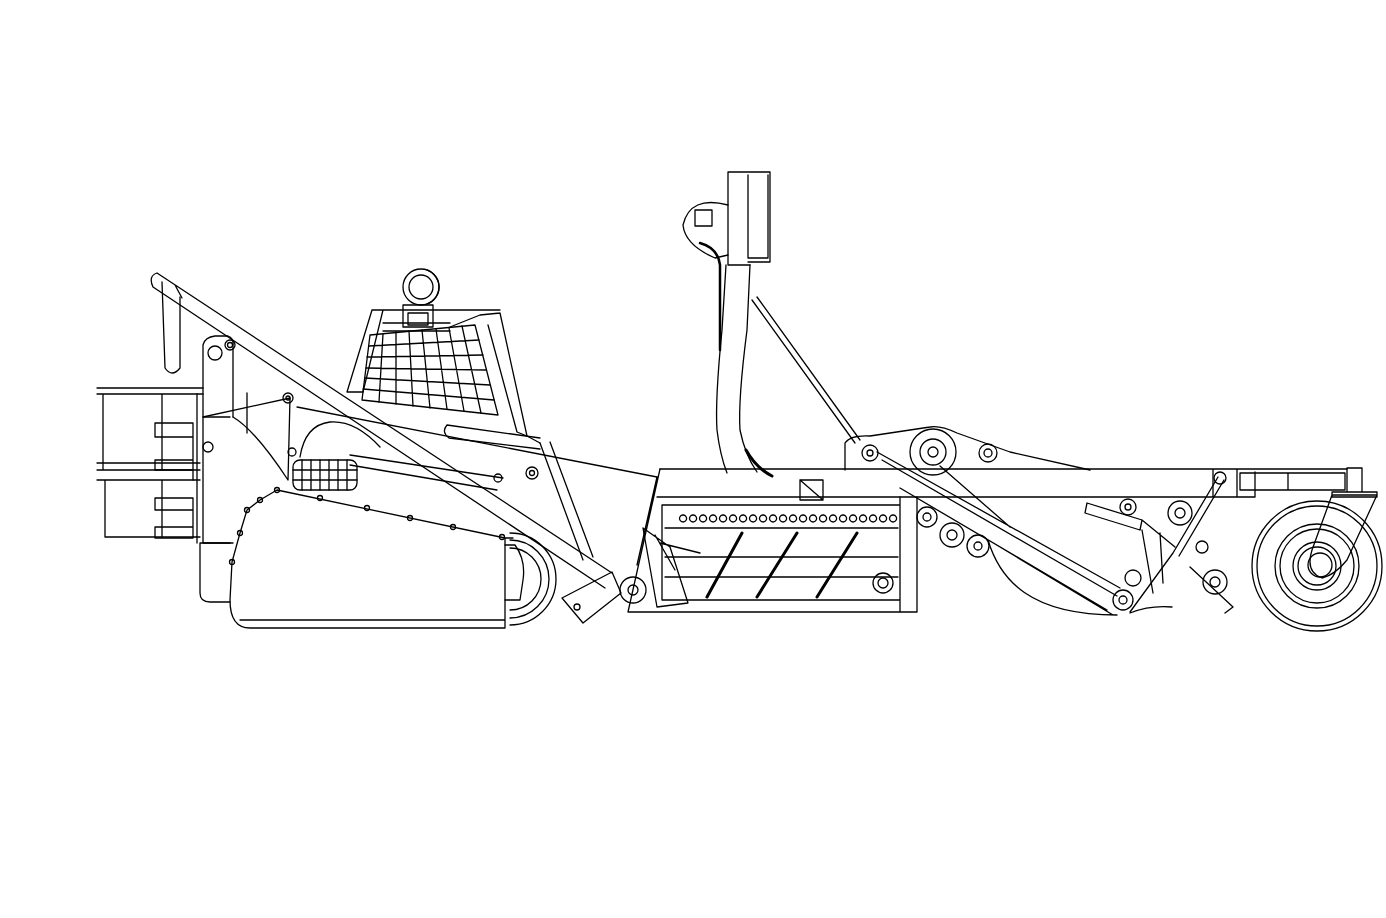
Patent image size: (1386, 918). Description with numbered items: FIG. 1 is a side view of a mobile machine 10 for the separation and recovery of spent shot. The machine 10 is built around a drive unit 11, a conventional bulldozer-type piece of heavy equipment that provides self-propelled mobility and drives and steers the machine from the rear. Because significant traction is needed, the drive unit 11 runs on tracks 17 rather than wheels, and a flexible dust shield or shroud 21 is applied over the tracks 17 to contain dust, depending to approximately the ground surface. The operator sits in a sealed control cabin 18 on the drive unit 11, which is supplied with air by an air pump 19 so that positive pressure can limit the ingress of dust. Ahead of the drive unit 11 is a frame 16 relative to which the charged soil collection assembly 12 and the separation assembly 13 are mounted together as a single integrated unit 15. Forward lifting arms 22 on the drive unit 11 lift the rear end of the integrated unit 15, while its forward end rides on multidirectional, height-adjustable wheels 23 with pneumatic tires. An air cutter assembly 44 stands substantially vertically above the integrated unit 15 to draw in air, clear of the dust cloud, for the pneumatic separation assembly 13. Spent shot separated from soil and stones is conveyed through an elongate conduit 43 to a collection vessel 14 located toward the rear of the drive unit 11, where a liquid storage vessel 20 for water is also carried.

The mobile machine 10 is at (333, 118).
The drive unit 11 is at (383, 283).
The charged soil collection assembly 12 is at (1225, 400).
The separation assembly 13 is at (590, 640).
The collection vessel 14 is at (123, 418).
The integrated unit 15 is at (1375, 163).
The frame 16 is at (1168, 458).
The tracks 17 is at (540, 633).
The control cabin 18 is at (503, 338).
The air pump 19 is at (447, 277).
The liquid storage vessel 20 is at (138, 510).
The dust shield or shroud 21 is at (325, 592).
The forward lifting arms 22 is at (543, 503).
The wheels 23 is at (1330, 643).
The elongate conduit 43 is at (215, 312).
The air cutter assembly 44 is at (783, 258).